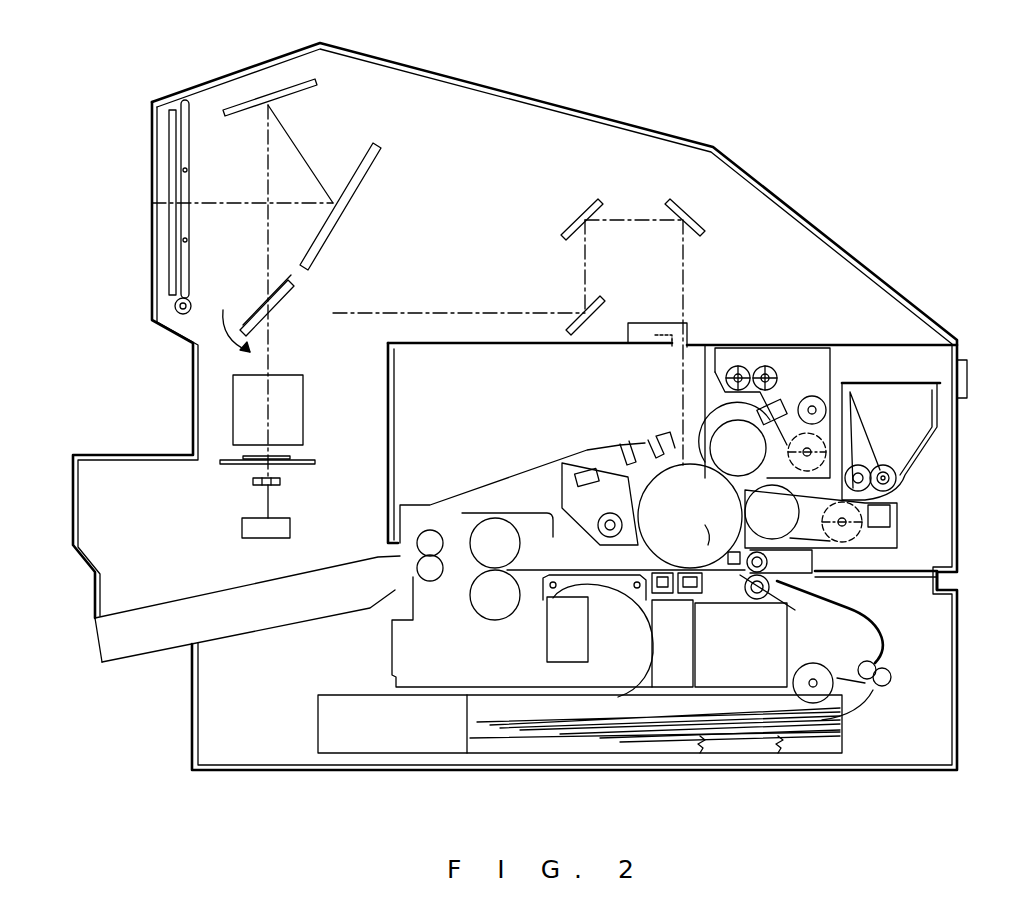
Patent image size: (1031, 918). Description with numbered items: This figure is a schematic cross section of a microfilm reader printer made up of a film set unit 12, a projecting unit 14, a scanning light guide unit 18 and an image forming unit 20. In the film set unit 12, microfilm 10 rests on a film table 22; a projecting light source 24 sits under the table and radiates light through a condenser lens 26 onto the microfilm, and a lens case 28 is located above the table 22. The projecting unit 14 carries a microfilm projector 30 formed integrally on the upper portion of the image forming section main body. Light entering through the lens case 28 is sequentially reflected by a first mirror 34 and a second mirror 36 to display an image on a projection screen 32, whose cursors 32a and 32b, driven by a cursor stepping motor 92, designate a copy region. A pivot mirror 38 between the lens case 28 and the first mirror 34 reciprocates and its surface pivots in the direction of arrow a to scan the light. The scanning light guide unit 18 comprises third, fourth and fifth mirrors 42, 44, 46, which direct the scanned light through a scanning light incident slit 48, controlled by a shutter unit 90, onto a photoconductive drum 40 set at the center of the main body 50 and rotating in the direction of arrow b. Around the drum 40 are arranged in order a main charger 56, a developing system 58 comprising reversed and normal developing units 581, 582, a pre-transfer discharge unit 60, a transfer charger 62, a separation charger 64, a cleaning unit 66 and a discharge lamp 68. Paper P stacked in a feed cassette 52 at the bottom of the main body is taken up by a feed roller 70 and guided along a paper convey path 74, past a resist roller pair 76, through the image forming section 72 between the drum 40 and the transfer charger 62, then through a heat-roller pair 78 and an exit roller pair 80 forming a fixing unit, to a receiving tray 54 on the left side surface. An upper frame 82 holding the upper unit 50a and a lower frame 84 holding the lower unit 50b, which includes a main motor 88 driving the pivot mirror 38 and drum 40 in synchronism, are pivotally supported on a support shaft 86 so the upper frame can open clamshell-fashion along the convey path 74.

The microfilm 10 is at (290, 458).
The film set unit 12 is at (173, 473).
The projecting unit 14 is at (268, 84).
The scanning light guide unit 18 is at (470, 112).
The image forming unit 20 is at (758, 342).
The film table 22 is at (240, 464).
The projecting light source 24 is at (290, 527).
The condenser lens 26 is at (280, 482).
The lens case 28 is at (303, 385).
The microfilm projector 30 is at (152, 172).
The projection screen 32 is at (169, 252).
The cursor 32a is at (187, 170).
The cursor 32b is at (187, 240).
The first mirror 34 is at (318, 84).
The second mirror 36 is at (377, 152).
The pivot mirror 38 is at (296, 284).
The photoconductive drum 40 is at (650, 544).
The third mirror 42 is at (603, 296).
The fourth mirror 44 is at (600, 200).
The fifth mirror 46 is at (700, 224).
The scanning light incident slit 48 is at (672, 352).
The main body 50 is at (476, 338).
The upper unit 50a is at (388, 424).
The lower unit 50b is at (392, 652).
The feed cassette 52 is at (418, 742).
The receiving tray 54 is at (242, 597).
The main charger 56 is at (660, 434).
The developing system 58 is at (905, 492).
The reversed developing unit 581 is at (937, 445).
The normal developing unit 582 is at (832, 360).
The pre-transfer discharge unit 60 is at (772, 512).
The transfer charger 62 is at (698, 596).
The separation charger 64 is at (660, 596).
The cleaning unit 66 is at (562, 493).
The discharge lamp 68 is at (624, 441).
The feed roller 70 is at (814, 664).
The image forming section 72 is at (684, 567).
The paper convey path 74 is at (602, 583).
The resist roller pair 76 is at (760, 603).
The heat-roller pair 78 is at (520, 547).
The exit roller pair 80 is at (415, 555).
The upper frame 82 is at (905, 578).
The lower frame 84 is at (950, 722).
The support shaft 86 is at (938, 570).
The main motor 88 is at (630, 674).
The shutter unit 90 is at (650, 322).
The cursor stepping motor 92 is at (192, 305).
The paper P is at (530, 728).
The arrow a is at (232, 337).
The arrow b is at (713, 518).